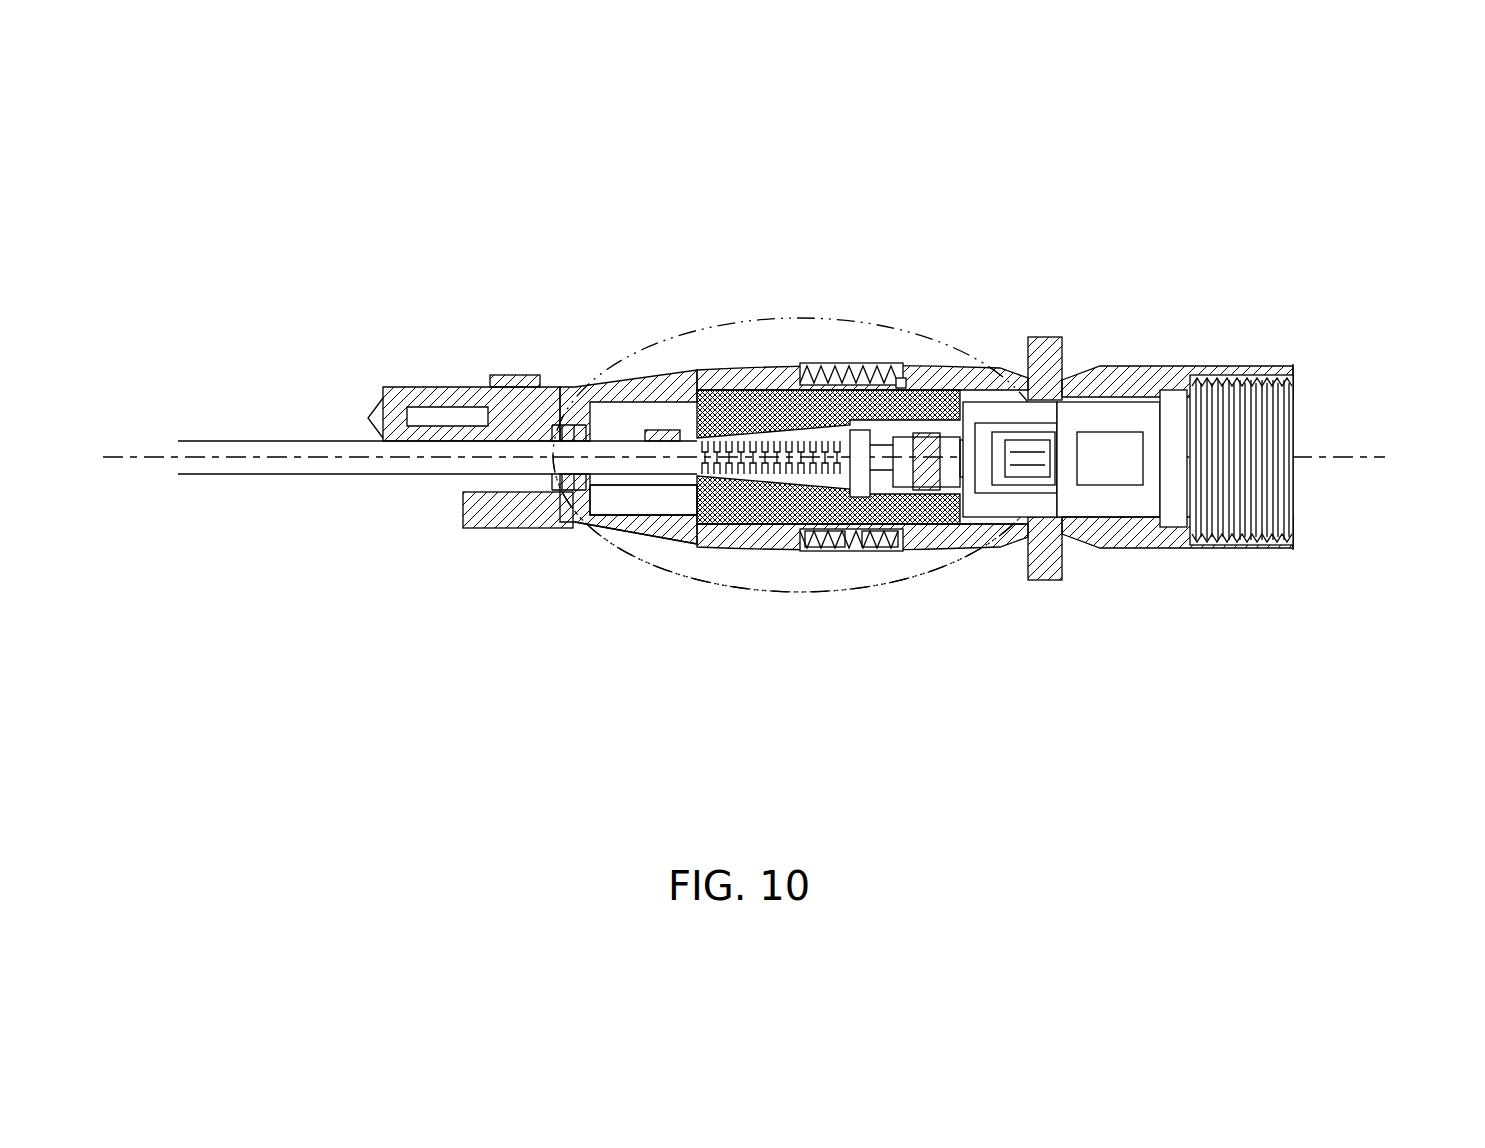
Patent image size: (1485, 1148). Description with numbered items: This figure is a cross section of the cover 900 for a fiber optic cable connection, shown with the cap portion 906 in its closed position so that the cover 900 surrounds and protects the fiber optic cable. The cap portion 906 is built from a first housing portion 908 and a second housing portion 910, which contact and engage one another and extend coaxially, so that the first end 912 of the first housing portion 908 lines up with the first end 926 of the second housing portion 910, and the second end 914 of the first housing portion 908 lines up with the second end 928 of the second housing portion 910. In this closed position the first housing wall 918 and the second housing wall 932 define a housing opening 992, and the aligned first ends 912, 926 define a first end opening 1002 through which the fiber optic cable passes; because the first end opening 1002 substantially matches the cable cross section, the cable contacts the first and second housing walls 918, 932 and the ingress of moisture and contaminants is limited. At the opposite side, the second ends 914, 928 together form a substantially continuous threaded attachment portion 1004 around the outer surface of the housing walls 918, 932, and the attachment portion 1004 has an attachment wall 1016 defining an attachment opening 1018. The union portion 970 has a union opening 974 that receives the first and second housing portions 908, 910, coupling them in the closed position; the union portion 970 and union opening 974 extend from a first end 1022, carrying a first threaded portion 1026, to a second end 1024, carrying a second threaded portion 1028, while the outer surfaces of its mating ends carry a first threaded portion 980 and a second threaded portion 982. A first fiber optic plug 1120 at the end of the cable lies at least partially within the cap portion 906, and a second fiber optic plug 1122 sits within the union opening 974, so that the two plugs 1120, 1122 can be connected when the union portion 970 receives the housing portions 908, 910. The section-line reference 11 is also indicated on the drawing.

The cover 900 is at (615, 146).
The cap portion 906 is at (553, 270).
The first housing portion 908 is at (662, 373).
The second housing portion 910 is at (663, 543).
The first end 912 is at (373, 300).
The second end 914 is at (788, 316).
The first housing wall 918 is at (720, 365).
The first end 926 is at (418, 545).
The second end 928 is at (788, 607).
The second housing wall 932 is at (717, 543).
The union portion 970 is at (1052, 337).
The union opening 974 is at (978, 402).
The first threaded portion 980 is at (873, 372).
The second threaded portion 982 is at (878, 545).
The housing opening 992 is at (632, 494).
The first end opening 1002 is at (572, 489).
The threaded attachment portion 1004 is at (827, 545).
The attachment wall 1016 is at (886, 374).
The attachment opening 1018 is at (890, 510).
The first end 1022 is at (803, 624).
The second end 1024 is at (1287, 328).
The first threaded portion 1026 is at (890, 546).
The second threaded portion 1028 is at (1233, 545).
The first fiber optic plug 1120 is at (1023, 494).
The second fiber optic plug 1122 is at (1112, 494).
The section line 11 is at (618, 355).